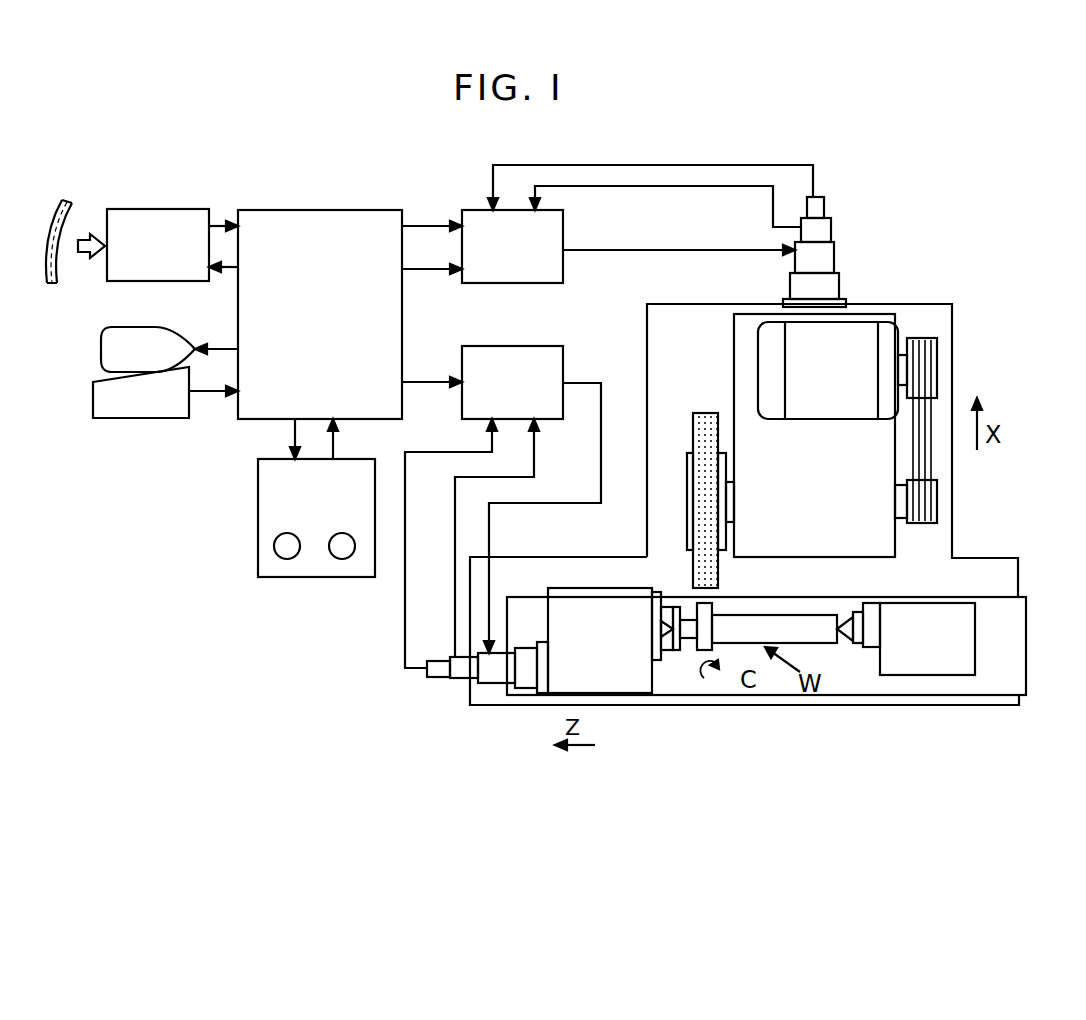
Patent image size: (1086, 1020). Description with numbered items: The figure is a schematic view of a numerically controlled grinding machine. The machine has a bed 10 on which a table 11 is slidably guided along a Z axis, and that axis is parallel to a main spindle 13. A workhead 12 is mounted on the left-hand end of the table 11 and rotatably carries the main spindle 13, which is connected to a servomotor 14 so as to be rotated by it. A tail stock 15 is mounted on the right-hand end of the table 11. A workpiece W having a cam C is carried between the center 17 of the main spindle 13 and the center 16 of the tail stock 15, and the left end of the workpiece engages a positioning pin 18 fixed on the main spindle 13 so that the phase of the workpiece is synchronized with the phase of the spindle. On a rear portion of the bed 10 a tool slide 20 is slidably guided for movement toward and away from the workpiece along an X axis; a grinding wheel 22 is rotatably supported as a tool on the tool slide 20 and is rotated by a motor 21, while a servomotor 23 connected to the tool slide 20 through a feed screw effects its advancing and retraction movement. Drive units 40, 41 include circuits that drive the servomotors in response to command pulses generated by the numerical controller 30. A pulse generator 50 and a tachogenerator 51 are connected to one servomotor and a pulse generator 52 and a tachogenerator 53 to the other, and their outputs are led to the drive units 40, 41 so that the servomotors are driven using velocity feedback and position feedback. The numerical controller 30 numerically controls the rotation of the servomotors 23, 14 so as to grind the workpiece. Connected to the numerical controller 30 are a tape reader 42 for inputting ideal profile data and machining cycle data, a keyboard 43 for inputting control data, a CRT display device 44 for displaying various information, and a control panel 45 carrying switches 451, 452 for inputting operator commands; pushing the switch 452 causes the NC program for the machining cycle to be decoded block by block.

The bed 10 is at (1008, 585).
The table 11 is at (1027, 675).
The workhead 12 is at (613, 696).
The main spindle 13 is at (655, 660).
The servomotor 14 is at (496, 684).
The tail stock 15 is at (933, 668).
The center of the tail stock 16 is at (845, 648).
The center of the main spindle 17 is at (702, 650).
The positioning pin 18 is at (665, 603).
The tool slide 20 is at (900, 548).
The motor 21 is at (860, 335).
The grinding wheel 22 is at (692, 422).
The servomotor 23 is at (836, 264).
The numerical controller 30 is at (244, 209).
The drive unit 40 is at (462, 209).
The drive unit 41 is at (463, 346).
The tape reader 42 is at (107, 208).
The keyboard 43 is at (97, 418).
The CRT display device 44 is at (100, 334).
The control panel 45 is at (283, 545).
The switch 451 is at (280, 559).
The switch 452 is at (341, 559).
The pulse generator 50 is at (432, 678).
The tachogenerator 51 is at (458, 679).
The pulse generator 52 is at (824, 197).
The tachogenerator 53 is at (831, 232).